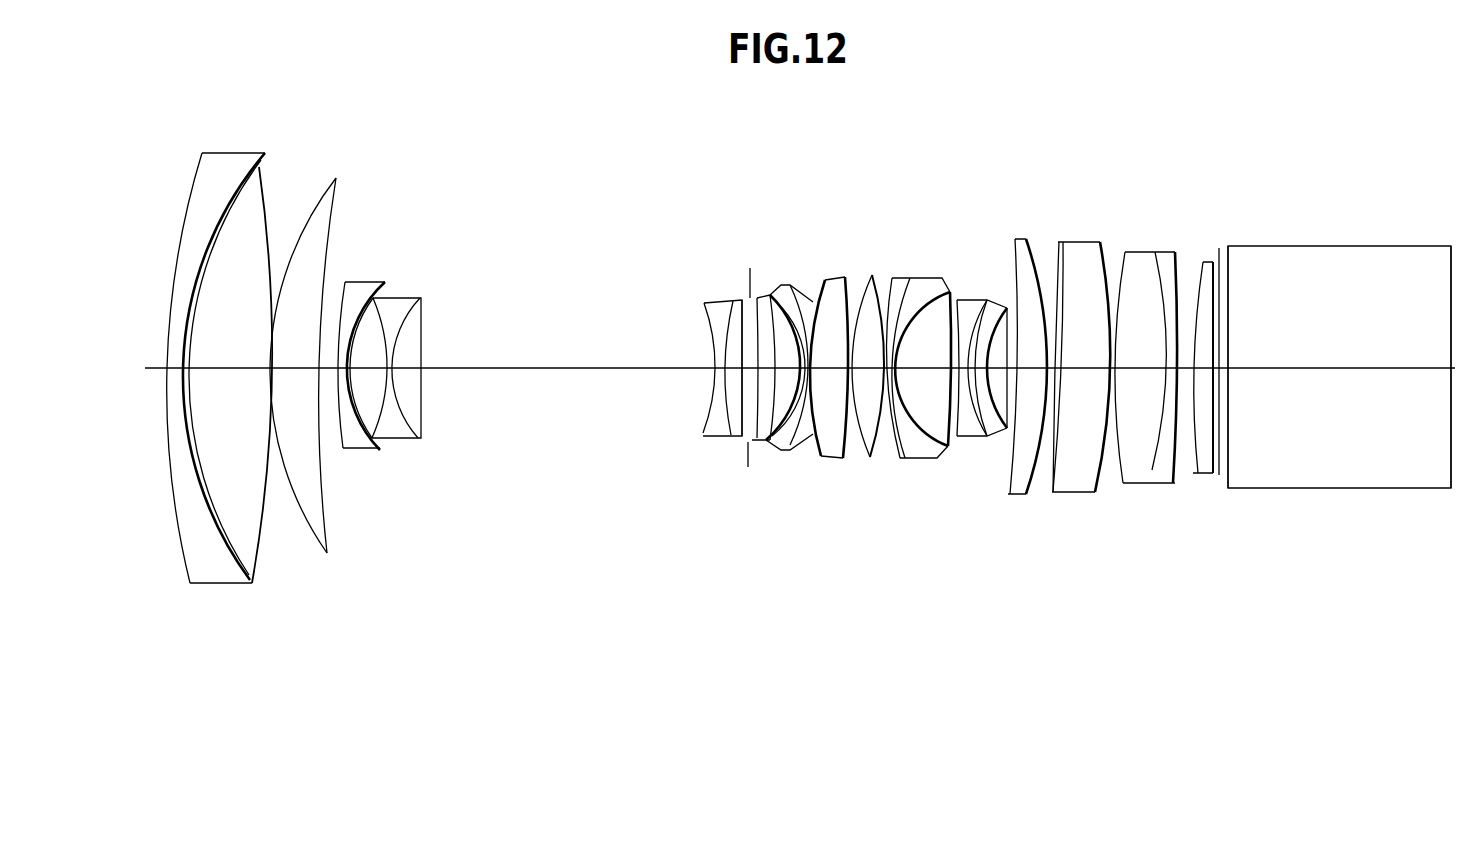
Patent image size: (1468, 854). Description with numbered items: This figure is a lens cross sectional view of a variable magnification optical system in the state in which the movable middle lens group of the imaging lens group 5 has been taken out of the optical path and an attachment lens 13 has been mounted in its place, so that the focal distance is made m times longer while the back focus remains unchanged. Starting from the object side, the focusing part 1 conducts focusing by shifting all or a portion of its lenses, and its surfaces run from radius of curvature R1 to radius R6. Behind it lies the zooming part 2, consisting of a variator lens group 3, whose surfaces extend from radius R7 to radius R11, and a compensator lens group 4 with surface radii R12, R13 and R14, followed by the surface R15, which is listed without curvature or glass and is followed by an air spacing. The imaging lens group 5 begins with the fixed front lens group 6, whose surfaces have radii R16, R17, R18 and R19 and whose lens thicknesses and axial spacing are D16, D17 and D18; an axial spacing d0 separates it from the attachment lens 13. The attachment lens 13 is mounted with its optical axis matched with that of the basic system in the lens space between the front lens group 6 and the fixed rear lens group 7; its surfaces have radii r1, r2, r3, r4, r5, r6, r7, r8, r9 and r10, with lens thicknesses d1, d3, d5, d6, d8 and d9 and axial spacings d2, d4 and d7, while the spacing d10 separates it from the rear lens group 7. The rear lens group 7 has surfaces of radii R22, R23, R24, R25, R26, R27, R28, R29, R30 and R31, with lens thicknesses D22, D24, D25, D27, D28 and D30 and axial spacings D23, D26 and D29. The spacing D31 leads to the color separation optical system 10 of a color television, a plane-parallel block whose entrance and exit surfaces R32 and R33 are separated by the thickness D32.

The focusing part 1 is at (178, 146).
The zooming part 2 is at (722, 141).
The variator lens group 3 is at (425, 248).
The compensator lens group 4 is at (742, 230).
The imaging lens group 5 is at (767, 135).
The front lens group 6 is at (797, 230).
The rear lens group 7 is at (1225, 191).
The color separation optical system 10 is at (1345, 246).
The attachment lens 13 is at (985, 228).
The radius of curvature of first lens surface R1 is at (189, 583).
The radius of curvature of sixth lens surface R6 is at (330, 550).
The radius of curvature of seventh lens surface R7 is at (343, 450).
The radius of curvature of eleventh lens surface R11 is at (421, 424).
The radius of curvature of twelfth lens surface R12 is at (707, 418).
The radius of curvature of thirteenth lens surface R13 is at (728, 436).
The radius of curvature of fourteenth lens surface R14 is at (740, 438).
The fifteenth surface R15 is at (748, 467).
The radius of curvature of sixteenth lens surface R16 is at (757, 440).
The radius of curvature of seventeenth lens surface R17 is at (777, 447).
The radius of curvature of eighteenth lens surface R18 is at (787, 430).
The radius of curvature of nineteenth lens surface R19 is at (797, 438).
The radius of curvature of first attachment lens surface r1 is at (813, 450).
The radius of curvature of second attachment lens surface r2 is at (843, 458).
The radius of curvature of third attachment lens surface r3 is at (863, 457).
The radius of curvature of fourth attachment lens surface r4 is at (878, 455).
The radius of curvature of fifth attachment lens surface r5 is at (900, 455).
The radius of curvature of sixth attachment lens surface r6 is at (923, 452).
The radius of curvature of seventh attachment lens surface r7 is at (945, 448).
The radius of curvature of eighth attachment lens surface r8 is at (957, 447).
The radius of curvature of ninth attachment lens surface r9 is at (982, 438).
The radius of curvature of tenth attachment lens surface r10 is at (1000, 450).
The radius of curvature of twenty-second lens surface R22 is at (1010, 494).
The radius of curvature of twenty-third lens surface R23 is at (1027, 496).
The radius of curvature of twenty-fourth lens surface R24 is at (1052, 494).
The radius of curvature of twenty-fifth lens surface R25 is at (1082, 480).
The radius of curvature of twenty-sixth lens surface R26 is at (1105, 482).
The radius of curvature of twenty-seventh lens surface R27 is at (1122, 487).
The radius of curvature of twenty-eighth lens surface R28 is at (1148, 470).
The radius of curvature of twenty-ninth lens surface R29 is at (1178, 483).
The radius of curvature of thirtieth lens surface R30 is at (1199, 476).
The radius of curvature of thirty-first lens surface R31 is at (1219, 477).
The front plane surface of color separation optical system R32 is at (1231, 484).
The rear plane surface of color separation optical system R33 is at (1448, 489).
The lens thickness at sixteenth surface D16 is at (757, 298).
The axial spacing at seventeenth surface D17 is at (781, 285).
The lens thickness at eighteenth surface D18 is at (813, 302).
The axial spacing between front lens group and attachment lens d0 is at (825, 285).
The lens thickness of first attachment lens element d1 is at (822, 360).
The axial spacing after second attachment lens surface d2 is at (872, 275).
The lens thickness of second attachment lens element d3 is at (861, 360).
The axial spacing after fourth attachment lens surface d4 is at (892, 278).
The lens thickness of third attachment lens element d5 is at (910, 278).
The lens thickness of fourth attachment lens element d6 is at (913, 360).
The axial spacing after seventh attachment lens surface d7 is at (959, 300).
The lens thickness of fifth attachment lens element d8 is at (978, 300).
The lens thickness of sixth attachment lens element d9 is at (990, 300).
The axial spacing between attachment lens and rear lens group d10 is at (1007, 308).
The lens thickness at twenty-second surface D22 is at (1021, 239).
The axial spacing at twenty-third surface D23 is at (1042, 252).
The lens thickness at twenty-fourth surface D24 is at (1085, 242).
The lens thickness at twenty-fifth surface D25 is at (1084, 360).
The axial spacing at twenty-sixth surface D26 is at (1125, 252).
The lens thickness at twenty-seventh surface D27 is at (1136, 360).
The lens thickness at twenty-eighth surface D28 is at (1155, 252).
The axial spacing at twenty-ninth surface D29 is at (1192, 295).
The lens thickness at thirtieth surface D30 is at (1212, 262).
The axial spacing between rear lens group and color separation optical system D31 is at (1219, 250).
The thickness of color separation optical system D32 is at (1359, 360).